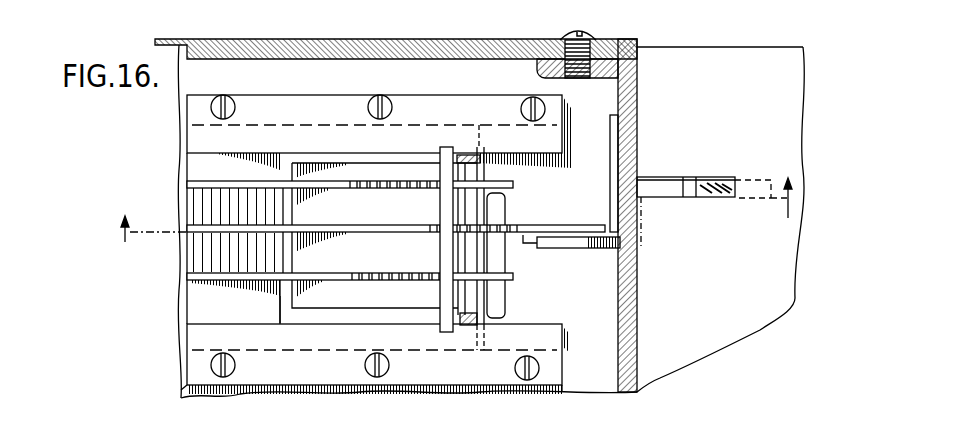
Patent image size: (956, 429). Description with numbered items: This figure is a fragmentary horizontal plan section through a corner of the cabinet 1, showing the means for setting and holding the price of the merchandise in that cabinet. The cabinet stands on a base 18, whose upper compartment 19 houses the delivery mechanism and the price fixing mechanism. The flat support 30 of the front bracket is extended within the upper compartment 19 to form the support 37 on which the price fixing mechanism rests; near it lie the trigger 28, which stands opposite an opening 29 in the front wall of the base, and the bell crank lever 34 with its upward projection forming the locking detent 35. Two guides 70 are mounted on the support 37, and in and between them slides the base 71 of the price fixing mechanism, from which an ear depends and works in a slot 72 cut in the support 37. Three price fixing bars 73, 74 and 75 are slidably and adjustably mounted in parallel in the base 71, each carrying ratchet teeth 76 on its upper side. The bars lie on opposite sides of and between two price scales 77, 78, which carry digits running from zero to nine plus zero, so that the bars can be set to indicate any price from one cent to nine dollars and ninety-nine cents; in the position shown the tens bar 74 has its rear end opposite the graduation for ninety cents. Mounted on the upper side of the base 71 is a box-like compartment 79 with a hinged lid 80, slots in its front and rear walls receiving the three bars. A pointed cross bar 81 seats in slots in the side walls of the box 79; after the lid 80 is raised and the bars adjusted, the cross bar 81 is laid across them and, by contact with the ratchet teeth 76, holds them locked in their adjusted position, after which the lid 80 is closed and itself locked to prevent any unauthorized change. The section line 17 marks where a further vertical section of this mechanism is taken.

The instrument housing 1 is at (380, 39).
The section line 17- 17 is at (446, 215).
The base 18 is at (636, 311).
The upper compartment 19 is at (594, 384).
The trigger 28 is at (587, 249).
The opening 29 is at (641, 230).
The flat support 30 is at (767, 313).
The bell crank lever 34 is at (757, 180).
The locking detent 35 is at (710, 198).
The support 37 is at (188, 396).
The guides 70 is at (295, 107).
The base of the price fixing mechanism 71 is at (340, 325).
The slot 72 is at (500, 303).
The price fixing bar 73 is at (330, 190).
The tens bar 74 is at (357, 233).
The price fixing bar 75 is at (320, 281).
The ratchet teeth 76 is at (393, 188).
The price scale 77 is at (187, 196).
The price scale 78 is at (187, 258).
The box-like compartment 79 is at (287, 301).
The hinged lid 80 is at (579, 424).
The pointed cross bar 81 is at (447, 256).